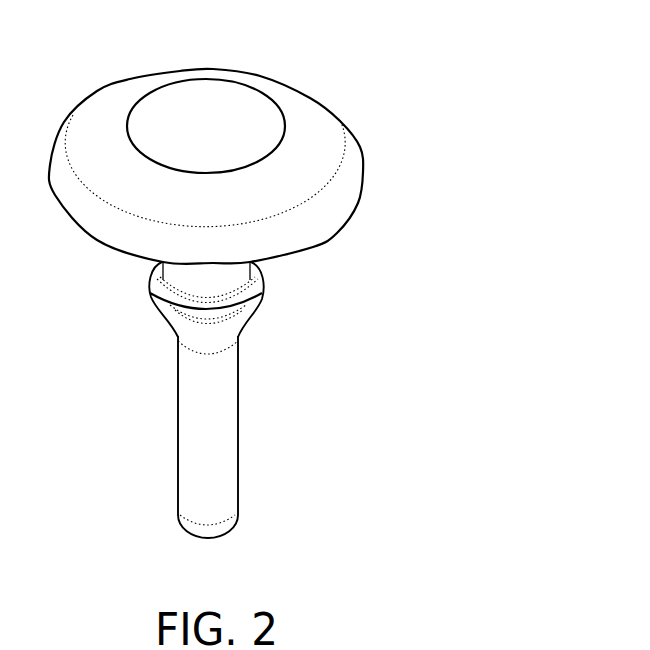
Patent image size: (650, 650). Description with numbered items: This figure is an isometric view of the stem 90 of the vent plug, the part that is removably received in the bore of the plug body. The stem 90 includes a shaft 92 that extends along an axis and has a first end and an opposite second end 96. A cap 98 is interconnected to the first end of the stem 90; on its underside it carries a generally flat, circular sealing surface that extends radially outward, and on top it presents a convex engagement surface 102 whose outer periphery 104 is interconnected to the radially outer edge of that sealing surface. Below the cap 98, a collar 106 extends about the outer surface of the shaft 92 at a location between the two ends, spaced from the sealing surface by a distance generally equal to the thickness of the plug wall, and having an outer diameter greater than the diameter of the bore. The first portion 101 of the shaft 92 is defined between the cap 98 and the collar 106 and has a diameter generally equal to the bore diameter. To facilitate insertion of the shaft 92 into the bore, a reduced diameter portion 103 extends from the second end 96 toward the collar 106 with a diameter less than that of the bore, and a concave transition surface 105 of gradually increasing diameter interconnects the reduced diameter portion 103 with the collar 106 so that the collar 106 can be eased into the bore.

The stem 90 is at (248, 306).
The shaft 92 is at (187, 377).
The second end 96 is at (220, 548).
The cap 98 is at (252, 142).
The first portion 101 is at (233, 278).
The convex engagement surface 102 is at (170, 105).
The reduced diameter portion 103 is at (190, 452).
The outer periphery 104 is at (362, 145).
The concave transition surface 105 is at (187, 337).
The collar 106 is at (256, 316).